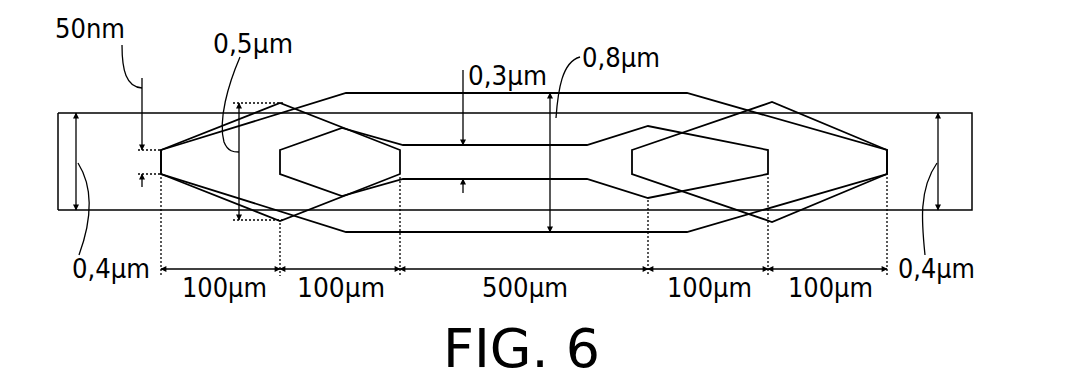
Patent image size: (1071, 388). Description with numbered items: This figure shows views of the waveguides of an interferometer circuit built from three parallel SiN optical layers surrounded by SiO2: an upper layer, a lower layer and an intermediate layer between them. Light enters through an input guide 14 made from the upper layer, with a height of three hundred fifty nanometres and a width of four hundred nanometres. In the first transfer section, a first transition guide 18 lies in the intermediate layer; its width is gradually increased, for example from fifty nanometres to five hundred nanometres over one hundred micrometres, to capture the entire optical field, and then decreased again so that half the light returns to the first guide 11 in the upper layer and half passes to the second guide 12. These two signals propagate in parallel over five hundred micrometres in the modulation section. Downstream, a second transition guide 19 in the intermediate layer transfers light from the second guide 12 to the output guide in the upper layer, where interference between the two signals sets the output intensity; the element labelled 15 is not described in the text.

The first guide 11 is at (398, 103).
The second guide 12 is at (438, 157).
The input guide 14 is at (153, 128).
The cladding layer 15 is at (908, 128).
The first transition guide 18 is at (207, 148).
The second transition guide 19 is at (828, 145).